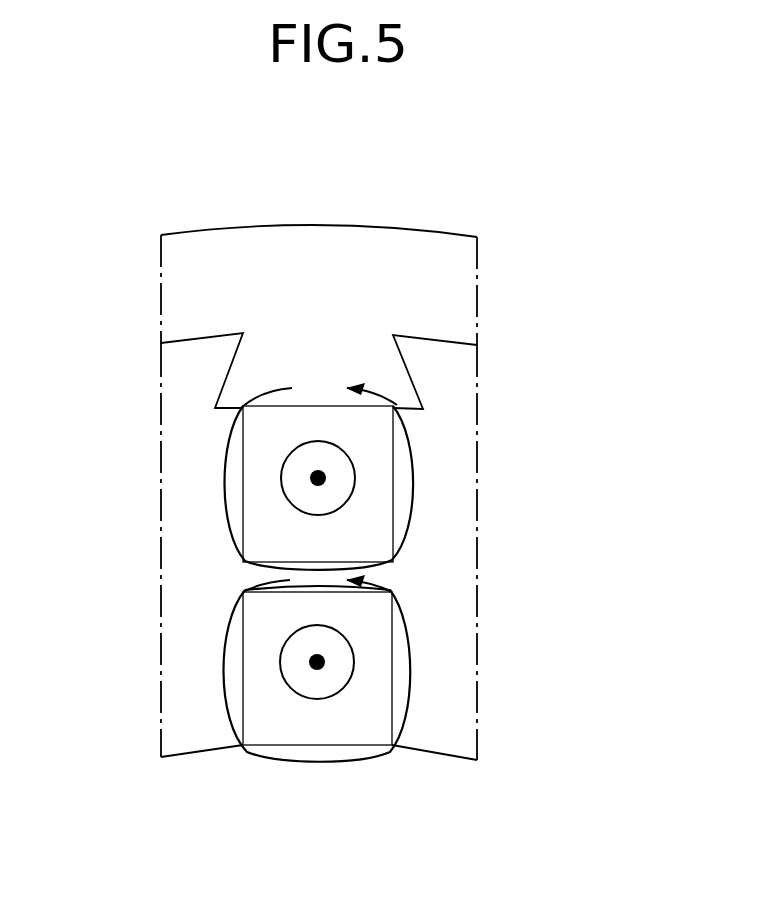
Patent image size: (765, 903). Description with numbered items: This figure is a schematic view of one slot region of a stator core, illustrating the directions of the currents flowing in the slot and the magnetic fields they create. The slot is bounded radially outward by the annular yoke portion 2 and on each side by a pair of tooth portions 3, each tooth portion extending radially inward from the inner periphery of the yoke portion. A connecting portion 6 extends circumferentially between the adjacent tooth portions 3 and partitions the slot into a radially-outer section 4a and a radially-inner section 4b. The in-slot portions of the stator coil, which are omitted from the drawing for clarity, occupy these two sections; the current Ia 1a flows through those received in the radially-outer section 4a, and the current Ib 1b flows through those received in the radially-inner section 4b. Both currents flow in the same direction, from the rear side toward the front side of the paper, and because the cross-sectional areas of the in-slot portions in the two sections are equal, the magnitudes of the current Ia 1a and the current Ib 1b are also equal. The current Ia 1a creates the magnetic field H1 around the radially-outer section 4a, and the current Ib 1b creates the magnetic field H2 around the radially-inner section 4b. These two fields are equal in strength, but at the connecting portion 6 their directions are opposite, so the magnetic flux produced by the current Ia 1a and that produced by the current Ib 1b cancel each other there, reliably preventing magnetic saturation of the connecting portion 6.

The annular yoke portion 2 is at (443, 250).
The tooth portion 3 is at (447, 555).
The radially-outer section 4a is at (272, 443).
The radially-inner section 4b is at (265, 630).
The current Ia 1a is at (281, 478).
The current Ib 1b is at (280, 662).
The connecting portion 6 is at (268, 575).
The magnetic field H1 is at (415, 460).
The magnetic field H2 is at (415, 655).